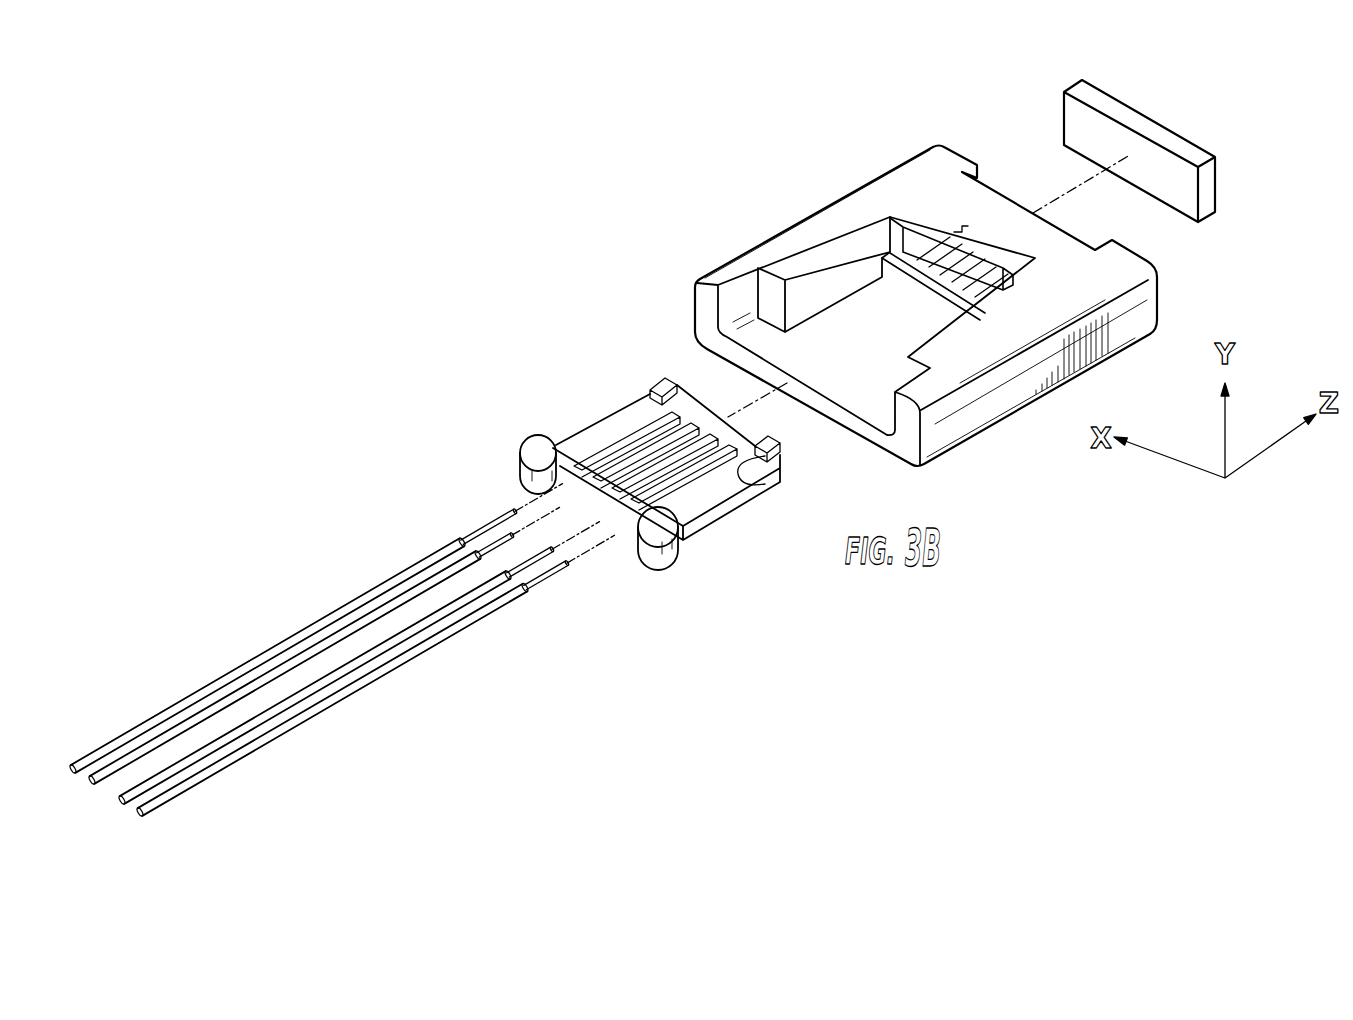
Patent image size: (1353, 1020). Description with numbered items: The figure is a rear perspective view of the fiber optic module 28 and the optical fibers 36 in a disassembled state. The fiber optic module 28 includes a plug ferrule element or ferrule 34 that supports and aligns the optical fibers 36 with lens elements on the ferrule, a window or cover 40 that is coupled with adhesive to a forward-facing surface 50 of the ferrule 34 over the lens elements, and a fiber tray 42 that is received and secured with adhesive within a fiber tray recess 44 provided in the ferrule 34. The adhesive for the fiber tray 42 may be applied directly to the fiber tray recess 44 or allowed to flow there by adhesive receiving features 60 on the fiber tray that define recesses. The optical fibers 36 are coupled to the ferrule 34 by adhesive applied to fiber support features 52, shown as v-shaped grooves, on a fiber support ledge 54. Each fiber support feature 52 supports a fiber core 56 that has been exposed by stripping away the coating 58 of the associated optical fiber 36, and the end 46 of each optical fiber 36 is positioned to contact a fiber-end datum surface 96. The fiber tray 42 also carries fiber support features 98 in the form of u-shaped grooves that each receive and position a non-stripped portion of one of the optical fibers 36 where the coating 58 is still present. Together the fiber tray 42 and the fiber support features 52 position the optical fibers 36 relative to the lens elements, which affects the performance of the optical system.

The fiber optic module 28 is at (721, 186).
The plug ferrule element 34 is at (827, 203).
The optical fibers 36 is at (287, 622).
The window 40 is at (1150, 116).
The fiber tray 42 is at (537, 440).
The fiber tray recess 44 is at (835, 387).
The end of optical fiber 46 is at (508, 518).
The forward-facing surface 50 is at (997, 192).
The fiber support features 52 is at (930, 246).
The fiber support ledge 54 is at (960, 273).
The fiber core 56 is at (482, 530).
The coating 58 is at (370, 593).
The adhesive receiving features 60 is at (633, 405).
The fiber-end datum surface 96 is at (962, 226).
The fiber support features 98 is at (588, 440).